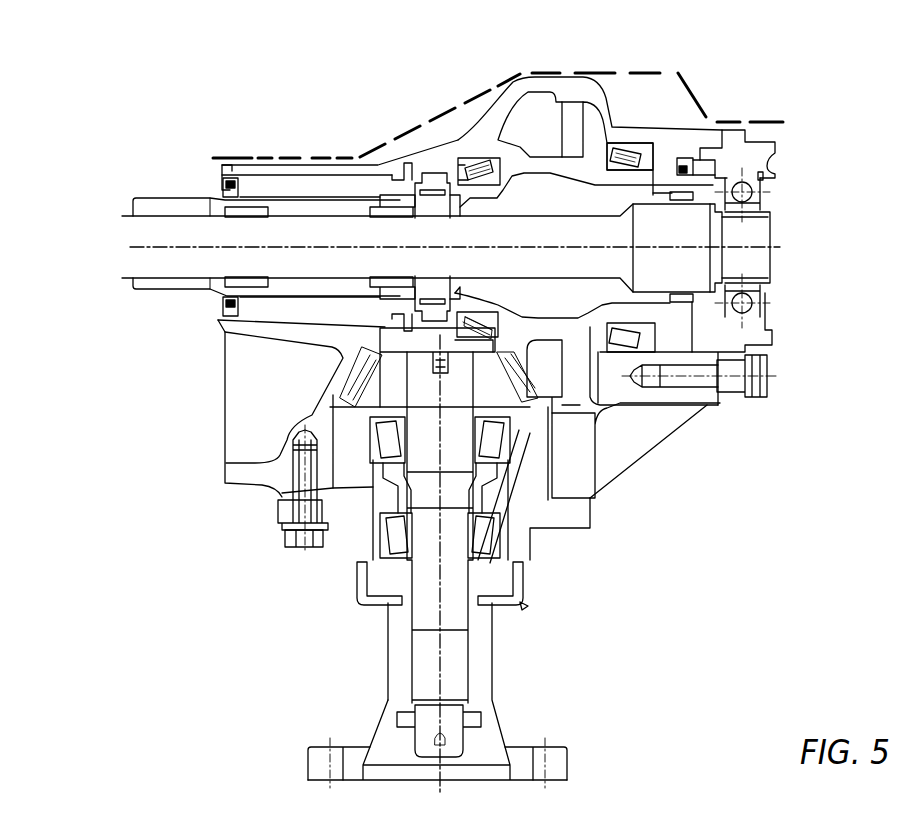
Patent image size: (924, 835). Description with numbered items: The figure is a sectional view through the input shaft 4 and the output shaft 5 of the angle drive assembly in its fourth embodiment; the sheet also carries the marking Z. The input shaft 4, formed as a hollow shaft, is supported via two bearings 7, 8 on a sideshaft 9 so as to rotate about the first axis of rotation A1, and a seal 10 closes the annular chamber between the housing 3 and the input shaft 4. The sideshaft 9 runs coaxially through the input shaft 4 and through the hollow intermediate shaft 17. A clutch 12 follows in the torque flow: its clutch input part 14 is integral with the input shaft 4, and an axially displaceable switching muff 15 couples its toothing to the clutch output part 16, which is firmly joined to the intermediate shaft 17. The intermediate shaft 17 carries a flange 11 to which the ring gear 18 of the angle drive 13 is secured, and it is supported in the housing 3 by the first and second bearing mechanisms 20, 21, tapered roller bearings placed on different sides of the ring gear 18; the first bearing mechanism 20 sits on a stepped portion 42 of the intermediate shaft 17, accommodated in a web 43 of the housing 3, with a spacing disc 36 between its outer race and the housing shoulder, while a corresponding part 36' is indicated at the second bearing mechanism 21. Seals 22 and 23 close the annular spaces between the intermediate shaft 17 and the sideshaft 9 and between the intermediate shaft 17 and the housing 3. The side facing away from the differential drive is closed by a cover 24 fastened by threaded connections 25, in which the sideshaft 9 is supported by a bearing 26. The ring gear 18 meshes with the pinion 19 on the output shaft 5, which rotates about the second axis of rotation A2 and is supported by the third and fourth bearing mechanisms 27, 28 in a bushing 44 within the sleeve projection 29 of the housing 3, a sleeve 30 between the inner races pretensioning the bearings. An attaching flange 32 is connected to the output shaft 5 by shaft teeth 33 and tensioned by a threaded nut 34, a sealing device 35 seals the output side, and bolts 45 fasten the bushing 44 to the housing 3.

The section line Z is at (276, 85).
The first axis of rotation A1 is at (165, 248).
The second axis of rotation A2 is at (442, 670).
The housing 3 is at (326, 176).
The input shaft 4 is at (298, 205).
The output shaft 5 is at (453, 620).
The bearing 7 is at (258, 205).
The bearing 8 is at (377, 187).
The sideshaft 9 is at (357, 233).
The seal 10 is at (222, 182).
The flange 11 is at (580, 113).
The clutch 12 is at (412, 158).
The angle drive 13 is at (550, 415).
The clutch input part 14 is at (393, 195).
The switching muff 15 is at (430, 183).
The clutch output part 16 is at (432, 205).
The intermediate shaft 17 is at (555, 175).
The ring gear 18 is at (540, 117).
The pinion 19 is at (377, 380).
The first bearing mechanism 20 is at (475, 162).
The second bearing mechanism 21 is at (633, 147).
The seal 22 is at (687, 203).
The seal 23 is at (682, 167).
The cover 24 is at (753, 147).
The threaded connections 25 is at (758, 380).
The bearing 26 is at (763, 193).
The third bearing mechanism 27 is at (377, 437).
The fourth bearing mechanism 28 is at (383, 540).
The sleeve projection 29 is at (578, 482).
The sleeve 30 is at (287, 493).
The attaching flange 32 is at (490, 722).
The shaft teeth 33 is at (410, 660).
The threaded nut 34 is at (400, 720).
The sealing device 35 is at (530, 605).
The spacing disc 36 is at (469, 197).
The tapered roller 36' is at (645, 123).
The stepped portion 42 is at (490, 193).
The web 43 is at (408, 340).
The bushing 44 is at (535, 522).
The bolts 45 is at (295, 533).